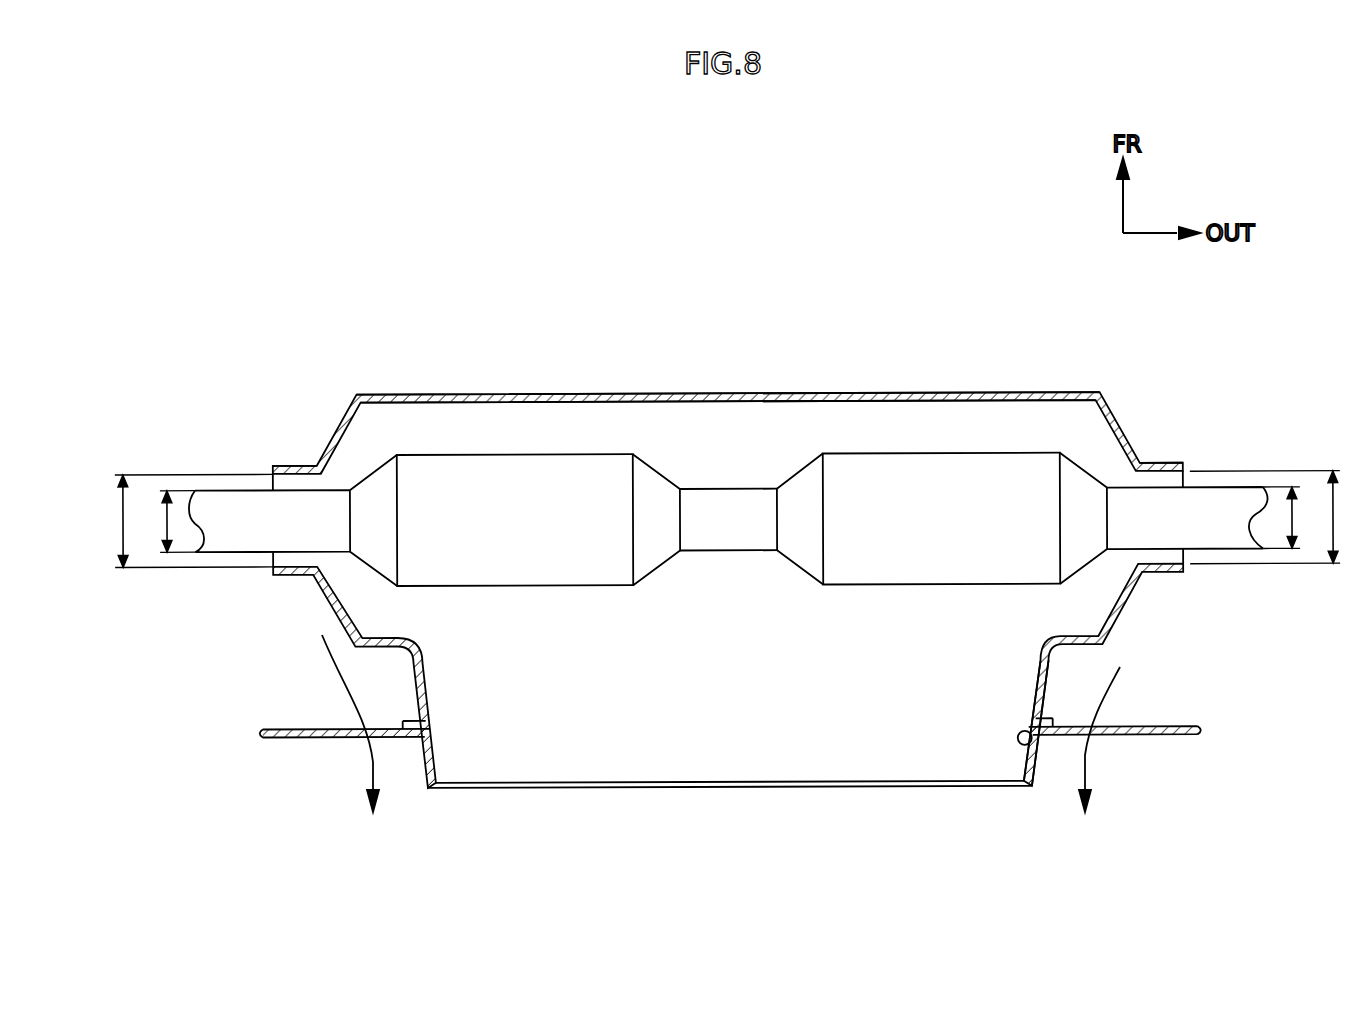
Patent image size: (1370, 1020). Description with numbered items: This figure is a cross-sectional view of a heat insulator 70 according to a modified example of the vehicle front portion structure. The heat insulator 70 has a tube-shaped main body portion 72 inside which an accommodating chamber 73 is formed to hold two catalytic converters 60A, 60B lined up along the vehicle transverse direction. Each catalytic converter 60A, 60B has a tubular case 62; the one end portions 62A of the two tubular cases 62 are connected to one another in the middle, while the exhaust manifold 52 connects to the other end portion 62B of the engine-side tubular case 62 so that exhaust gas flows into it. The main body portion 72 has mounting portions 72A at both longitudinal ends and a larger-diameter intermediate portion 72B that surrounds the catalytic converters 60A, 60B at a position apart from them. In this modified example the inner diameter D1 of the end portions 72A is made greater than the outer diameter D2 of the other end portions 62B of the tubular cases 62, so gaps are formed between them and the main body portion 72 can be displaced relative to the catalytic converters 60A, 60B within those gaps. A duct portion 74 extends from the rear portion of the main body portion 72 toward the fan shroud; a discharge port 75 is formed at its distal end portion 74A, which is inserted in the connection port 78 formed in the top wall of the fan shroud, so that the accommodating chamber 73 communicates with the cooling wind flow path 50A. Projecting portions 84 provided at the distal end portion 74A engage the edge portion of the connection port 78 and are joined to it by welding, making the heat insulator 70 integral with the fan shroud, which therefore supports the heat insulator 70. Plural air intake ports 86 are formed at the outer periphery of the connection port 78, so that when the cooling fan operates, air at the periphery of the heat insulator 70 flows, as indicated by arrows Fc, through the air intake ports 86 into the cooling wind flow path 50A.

The heat insulator 70 is at (728, 602).
The main body portion 72 is at (737, 408).
The mounting portions 72A is at (292, 465).
The intermediate portion 72B is at (790, 392).
The accommodating chamber 73 is at (740, 449).
The duct portion 74 is at (728, 714).
The distal end portion 74A is at (1040, 780).
The discharge port 75 is at (1026, 766).
The connection port 78 is at (1033, 754).
The projecting portions 84 is at (403, 722).
The air intake ports 86 is at (730, 735).
The other end portion 62B is at (258, 489).
The one end portions 62A is at (702, 553).
The tubular case 62 is at (502, 586).
The catalytic converter 60A is at (945, 592).
The catalytic converter 60B is at (729, 564).
The exhaust manifold 52 is at (1212, 552).
The cooling wind flow path 50A is at (1268, 831).
The arrows FC Fc is at (382, 782).
The inner diameter D1 is at (733, 519).
The outer diameter D2 is at (730, 520).